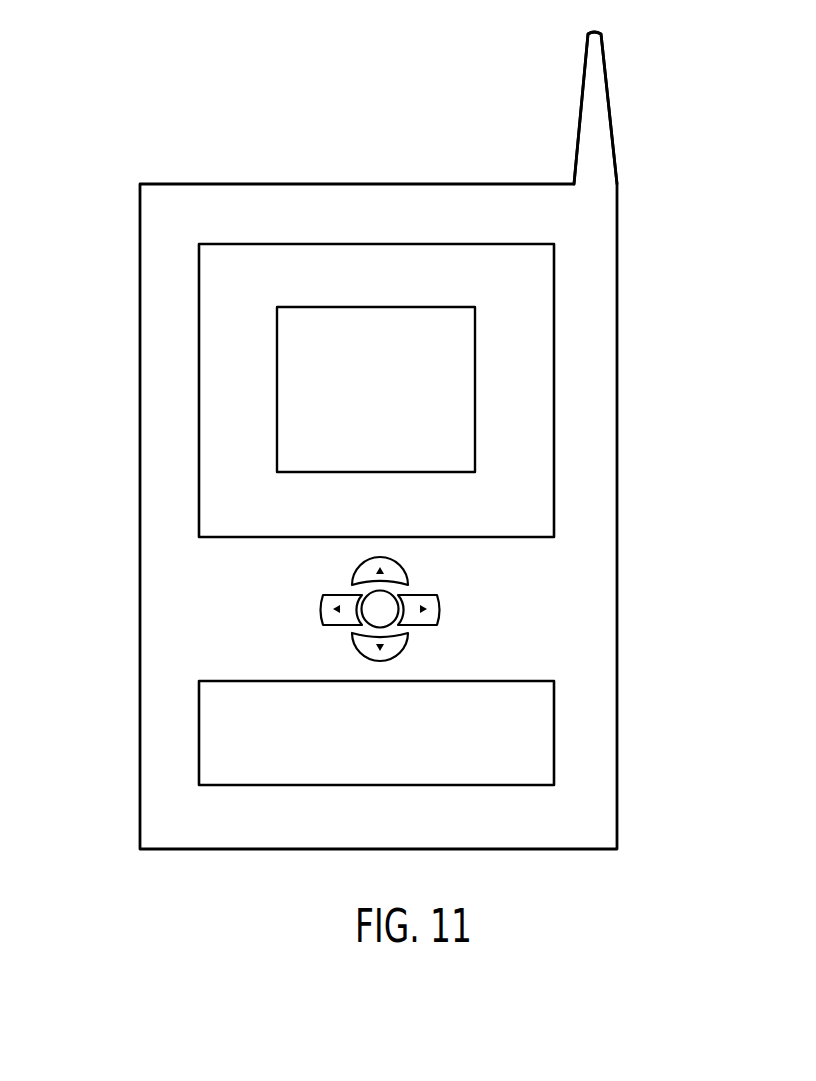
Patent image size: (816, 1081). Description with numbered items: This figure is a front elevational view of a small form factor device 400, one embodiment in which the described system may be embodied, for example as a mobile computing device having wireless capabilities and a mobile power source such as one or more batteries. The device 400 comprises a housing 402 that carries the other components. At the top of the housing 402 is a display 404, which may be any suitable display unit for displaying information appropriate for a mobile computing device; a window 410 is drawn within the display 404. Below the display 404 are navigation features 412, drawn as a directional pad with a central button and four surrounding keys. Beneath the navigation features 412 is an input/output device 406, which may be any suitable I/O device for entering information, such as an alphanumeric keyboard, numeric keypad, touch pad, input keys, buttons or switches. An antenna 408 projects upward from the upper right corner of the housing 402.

The small form factor device 400 is at (138, 124).
The housing 402 is at (140, 600).
The display 404 is at (554, 298).
The input/output (I/O) device 406 is at (554, 730).
The antenna 408 is at (582, 106).
The display window 410 is at (376, 307).
The navigation features 412 is at (470, 611).